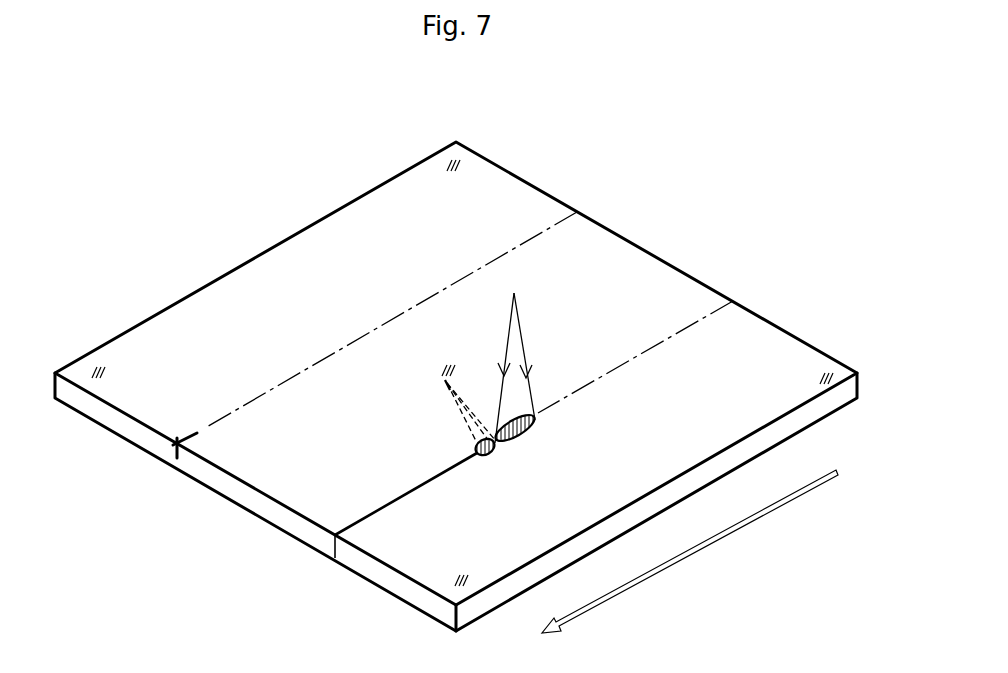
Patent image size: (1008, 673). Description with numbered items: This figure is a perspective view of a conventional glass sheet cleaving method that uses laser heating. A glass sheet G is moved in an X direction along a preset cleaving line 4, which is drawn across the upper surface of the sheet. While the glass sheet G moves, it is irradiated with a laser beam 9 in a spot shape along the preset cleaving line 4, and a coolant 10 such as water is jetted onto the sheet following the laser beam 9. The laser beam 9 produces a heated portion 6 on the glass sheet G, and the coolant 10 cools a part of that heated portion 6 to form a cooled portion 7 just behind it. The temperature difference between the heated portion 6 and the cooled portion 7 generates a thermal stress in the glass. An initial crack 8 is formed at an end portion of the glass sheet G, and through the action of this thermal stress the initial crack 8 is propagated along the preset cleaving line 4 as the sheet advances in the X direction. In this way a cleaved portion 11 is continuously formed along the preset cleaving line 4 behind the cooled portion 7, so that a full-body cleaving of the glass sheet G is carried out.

The preset cleaving line 4 is at (512, 250).
The glass sheet G is at (593, 272).
The heated portion 6 is at (526, 434).
The cooled portion 7 is at (489, 456).
The initial crack 8 is at (183, 433).
The laser beam 9 is at (512, 322).
The coolant 10 is at (461, 420).
The cleaved portion 11 is at (412, 493).
The X direction X is at (690, 551).